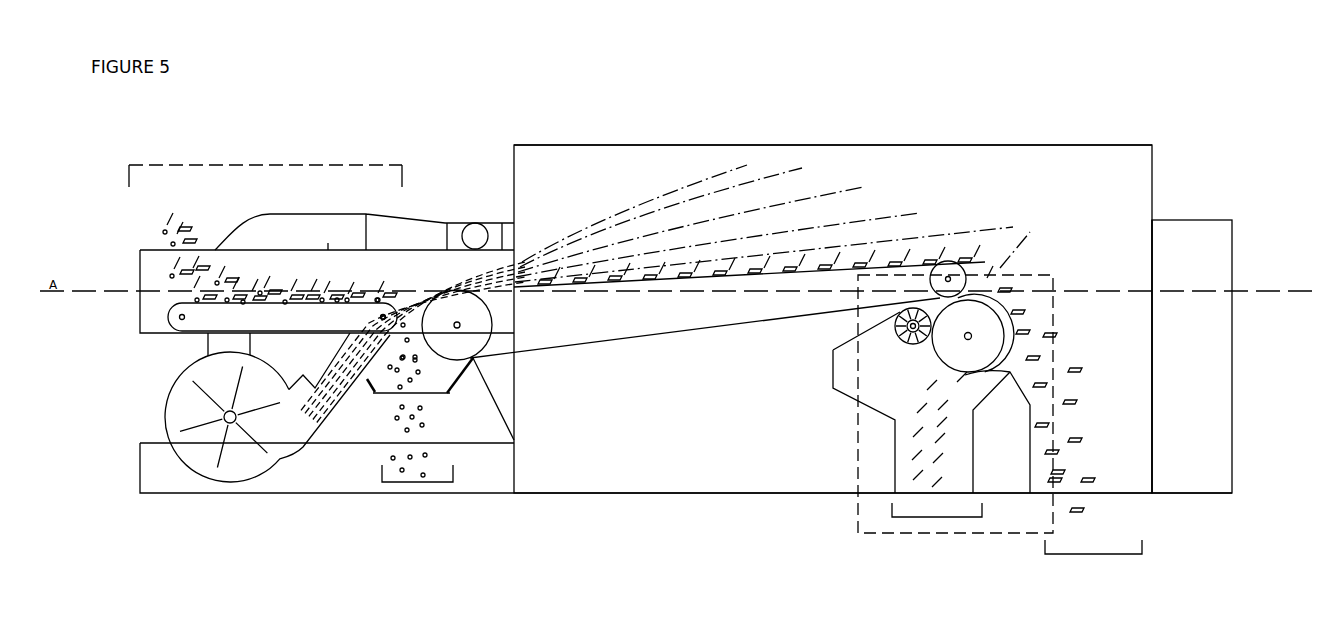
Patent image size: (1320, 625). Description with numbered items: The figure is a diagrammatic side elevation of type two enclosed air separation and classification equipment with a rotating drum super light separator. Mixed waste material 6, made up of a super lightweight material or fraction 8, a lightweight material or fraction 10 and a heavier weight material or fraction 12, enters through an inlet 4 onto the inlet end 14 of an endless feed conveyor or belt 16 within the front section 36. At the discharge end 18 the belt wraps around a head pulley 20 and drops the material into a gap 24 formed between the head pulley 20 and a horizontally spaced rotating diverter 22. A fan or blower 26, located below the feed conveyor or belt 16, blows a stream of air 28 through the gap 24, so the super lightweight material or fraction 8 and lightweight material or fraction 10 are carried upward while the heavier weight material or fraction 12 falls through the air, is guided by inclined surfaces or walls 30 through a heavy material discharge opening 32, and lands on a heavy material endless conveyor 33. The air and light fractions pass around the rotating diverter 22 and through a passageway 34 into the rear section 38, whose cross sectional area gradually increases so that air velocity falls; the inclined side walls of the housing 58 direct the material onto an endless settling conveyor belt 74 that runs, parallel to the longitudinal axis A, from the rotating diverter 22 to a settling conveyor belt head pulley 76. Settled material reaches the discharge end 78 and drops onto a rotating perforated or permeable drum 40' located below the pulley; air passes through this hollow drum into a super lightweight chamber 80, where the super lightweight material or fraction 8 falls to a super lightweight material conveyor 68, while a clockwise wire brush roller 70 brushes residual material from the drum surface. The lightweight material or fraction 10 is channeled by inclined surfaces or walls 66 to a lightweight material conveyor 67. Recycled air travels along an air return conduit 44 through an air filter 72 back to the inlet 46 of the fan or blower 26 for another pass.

The inlet 4 is at (189, 212).
The mixed waste material 6 is at (158, 231).
The super lightweight material or fraction 8 is at (617, 280).
The lightweight material or fraction 10 is at (727, 263).
The heavier weight material or fraction 12 is at (392, 457).
The inlet end 14 is at (170, 318).
The feed conveyor or belt 16 is at (185, 338).
The discharge end 18 is at (362, 313).
The head pulley 20 is at (393, 318).
The rotating diverter 22 is at (498, 255).
The gap 24 is at (465, 228).
The fan or blower 26 is at (248, 467).
The stream of air 28 is at (340, 393).
The inclined surfaces or walls 30 is at (485, 403).
The heavy material discharge opening 32 is at (447, 378).
The heavy material endless conveyor 33 is at (418, 485).
The passageway 34 is at (530, 268).
The front section 36 is at (268, 165).
The rear section 38 is at (1005, 142).
The rotating perforated or permeable drum 40' is at (1133, 340).
The air return conduit 44 is at (300, 212).
The inlet of the fan or blower 46 is at (190, 350).
The housing 58 is at (883, 142).
The inclined surfaces or walls 66 is at (515, 355).
The lightweight material conveyor 67 is at (1092, 555).
The super lightweight material conveyor 68 is at (935, 517).
The wire brush roller 70 is at (897, 327).
The air filter 72 is at (1234, 223).
The endless settling conveyor belt 74 is at (707, 327).
The settling conveyor belt head pulley 76 is at (967, 270).
The discharge end 78 is at (1020, 263).
The super lightweight chamber 80 is at (857, 453).